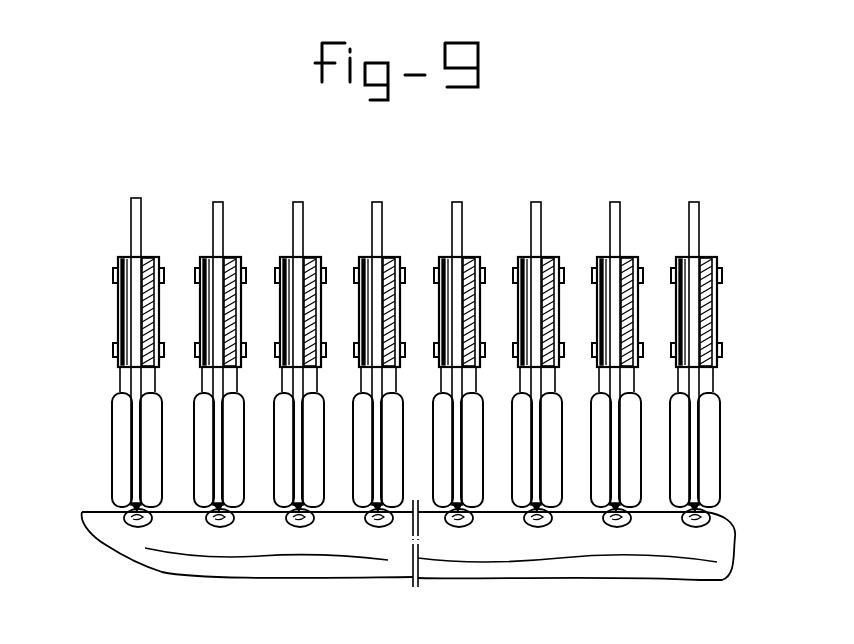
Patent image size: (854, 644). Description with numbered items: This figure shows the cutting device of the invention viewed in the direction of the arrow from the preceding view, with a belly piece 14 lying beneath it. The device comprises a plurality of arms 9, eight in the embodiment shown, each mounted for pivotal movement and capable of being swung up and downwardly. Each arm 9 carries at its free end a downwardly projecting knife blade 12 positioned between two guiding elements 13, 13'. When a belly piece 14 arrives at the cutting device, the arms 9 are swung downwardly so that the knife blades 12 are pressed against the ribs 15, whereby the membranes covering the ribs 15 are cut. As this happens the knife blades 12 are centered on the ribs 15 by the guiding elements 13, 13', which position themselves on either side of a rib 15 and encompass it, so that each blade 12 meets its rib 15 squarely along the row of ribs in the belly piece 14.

The arm 9 is at (143, 257).
The knife blade 12 is at (376, 209).
The guiding element 13 is at (416, 450).
The guiding element 13' is at (419, 450).
The belly piece 14 is at (720, 538).
The rib 15 is at (139, 527).